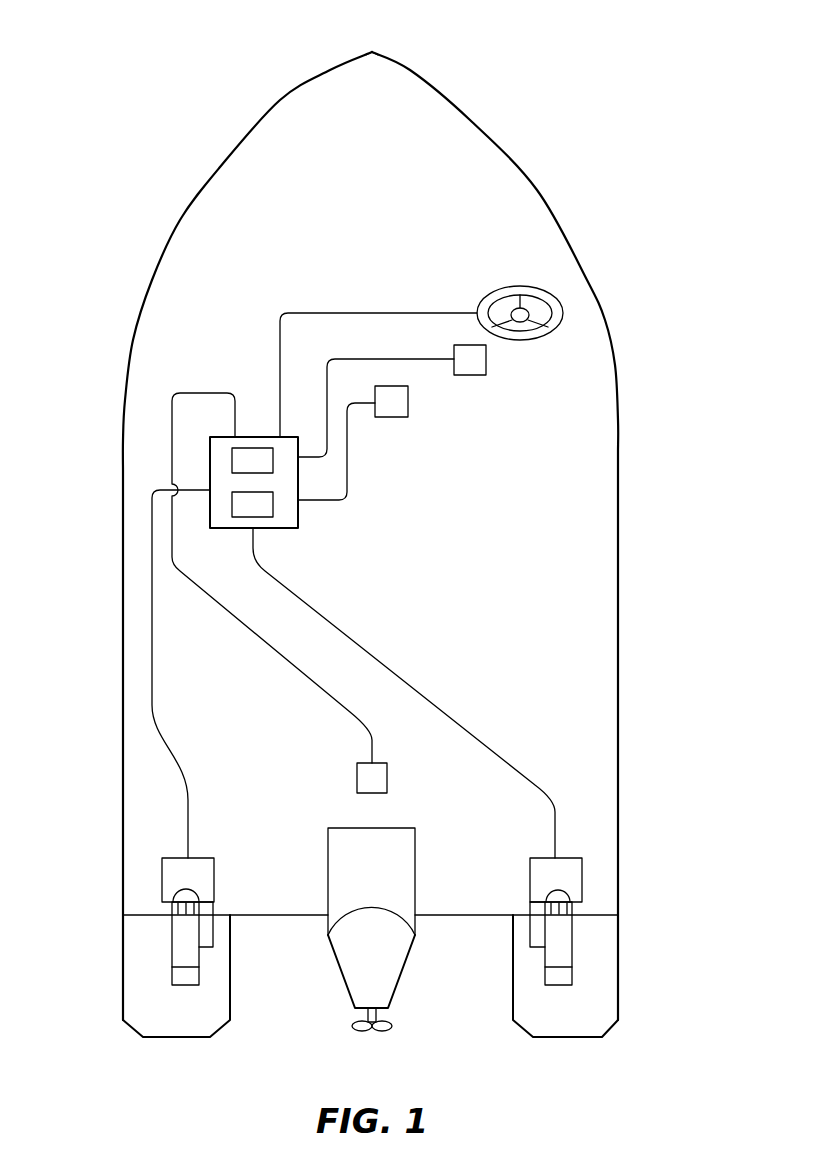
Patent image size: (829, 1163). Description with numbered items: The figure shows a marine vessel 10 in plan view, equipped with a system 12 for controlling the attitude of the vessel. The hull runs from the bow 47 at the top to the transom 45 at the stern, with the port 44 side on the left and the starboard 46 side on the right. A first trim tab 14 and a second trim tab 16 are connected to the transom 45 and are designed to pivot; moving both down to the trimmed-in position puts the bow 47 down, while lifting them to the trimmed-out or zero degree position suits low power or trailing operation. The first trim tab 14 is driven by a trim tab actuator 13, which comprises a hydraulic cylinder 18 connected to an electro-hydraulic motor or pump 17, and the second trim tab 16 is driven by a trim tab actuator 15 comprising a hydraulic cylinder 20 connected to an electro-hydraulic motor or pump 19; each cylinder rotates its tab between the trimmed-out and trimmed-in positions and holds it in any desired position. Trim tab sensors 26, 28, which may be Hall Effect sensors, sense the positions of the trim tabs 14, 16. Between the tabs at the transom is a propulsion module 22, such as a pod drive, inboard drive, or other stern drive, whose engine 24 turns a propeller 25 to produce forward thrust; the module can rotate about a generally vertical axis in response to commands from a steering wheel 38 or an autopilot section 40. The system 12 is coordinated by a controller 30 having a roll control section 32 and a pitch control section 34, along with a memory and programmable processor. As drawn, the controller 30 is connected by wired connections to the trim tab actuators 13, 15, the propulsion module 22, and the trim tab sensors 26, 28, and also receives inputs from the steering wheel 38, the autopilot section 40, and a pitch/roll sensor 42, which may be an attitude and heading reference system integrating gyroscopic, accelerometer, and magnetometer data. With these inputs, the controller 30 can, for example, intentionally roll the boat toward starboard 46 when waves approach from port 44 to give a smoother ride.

The marine vessel 10 is at (620, 420).
The system for controlling an attitude 12 is at (398, 572).
The trim tab actuator 13 is at (174, 912).
The trim tab 14 is at (170, 1040).
The trim tab actuator 15 is at (575, 902).
The trim tab 16 is at (567, 1040).
The electro-hydraulic motor or pump 17 is at (214, 873).
The hydraulic cylinder 18 is at (188, 958).
The electro-hydraulic motor or pump 19 is at (530, 870).
The hydraulic cylinder 20 is at (563, 950).
The propulsion module 22 is at (373, 919).
The engine 24 is at (390, 878).
The propeller 25 is at (374, 1030).
The trim tab sensor 26 is at (207, 925).
The trim tab sensor 28 is at (538, 935).
The controller 30 is at (286, 458).
The roll control section 32 is at (255, 448).
The pitch control section 34 is at (273, 507).
The steering wheel 38 is at (533, 340).
The autopilot section 40 is at (468, 375).
The pitch/roll sensor 42 is at (393, 417).
The port 44 is at (100, 530).
The transom 45 is at (452, 918).
The starboard 46 is at (641, 530).
The bow 47 is at (372, 52).